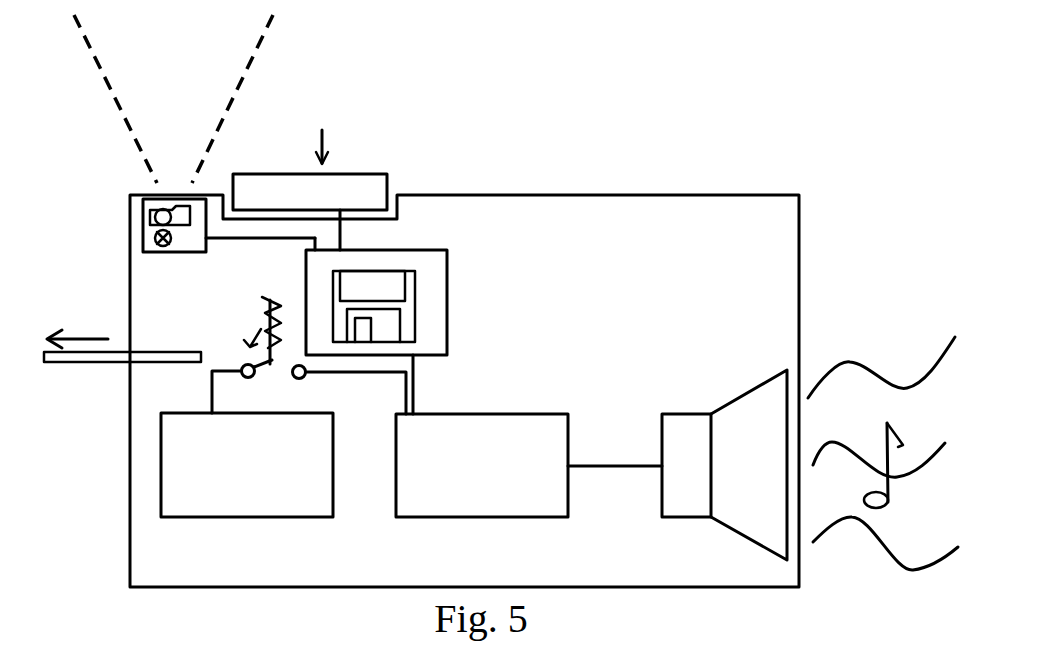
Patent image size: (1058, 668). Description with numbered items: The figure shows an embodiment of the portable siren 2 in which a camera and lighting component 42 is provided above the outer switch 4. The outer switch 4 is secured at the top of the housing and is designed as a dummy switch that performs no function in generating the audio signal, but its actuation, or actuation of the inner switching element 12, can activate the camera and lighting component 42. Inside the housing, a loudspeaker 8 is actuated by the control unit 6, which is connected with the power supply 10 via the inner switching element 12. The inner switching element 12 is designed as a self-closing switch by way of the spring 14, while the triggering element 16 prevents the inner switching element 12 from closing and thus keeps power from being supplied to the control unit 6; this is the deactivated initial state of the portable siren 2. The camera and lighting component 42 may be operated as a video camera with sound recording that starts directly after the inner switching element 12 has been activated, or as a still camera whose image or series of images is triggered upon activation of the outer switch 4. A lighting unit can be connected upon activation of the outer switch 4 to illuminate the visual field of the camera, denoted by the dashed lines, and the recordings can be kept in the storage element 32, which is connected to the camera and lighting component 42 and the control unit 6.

The portable siren 2 is at (518, 180).
The outer switch 4 is at (310, 190).
The control unit 6 is at (529, 465).
The loudspeaker 8 is at (724, 465).
The power supply 10 is at (247, 465).
The inner switching element 12 is at (258, 317).
The spring 14 is at (238, 337).
The triggering element 16 is at (113, 367).
The storage element 32 is at (438, 293).
The camera and lighting component 42 is at (148, 231).